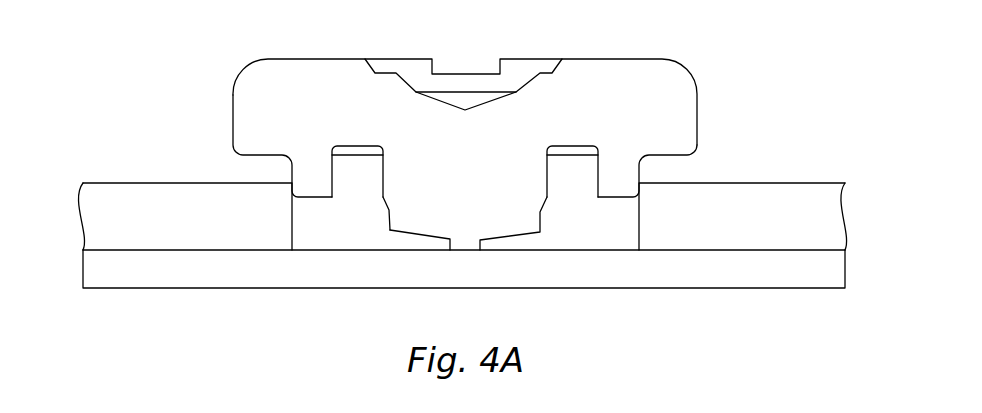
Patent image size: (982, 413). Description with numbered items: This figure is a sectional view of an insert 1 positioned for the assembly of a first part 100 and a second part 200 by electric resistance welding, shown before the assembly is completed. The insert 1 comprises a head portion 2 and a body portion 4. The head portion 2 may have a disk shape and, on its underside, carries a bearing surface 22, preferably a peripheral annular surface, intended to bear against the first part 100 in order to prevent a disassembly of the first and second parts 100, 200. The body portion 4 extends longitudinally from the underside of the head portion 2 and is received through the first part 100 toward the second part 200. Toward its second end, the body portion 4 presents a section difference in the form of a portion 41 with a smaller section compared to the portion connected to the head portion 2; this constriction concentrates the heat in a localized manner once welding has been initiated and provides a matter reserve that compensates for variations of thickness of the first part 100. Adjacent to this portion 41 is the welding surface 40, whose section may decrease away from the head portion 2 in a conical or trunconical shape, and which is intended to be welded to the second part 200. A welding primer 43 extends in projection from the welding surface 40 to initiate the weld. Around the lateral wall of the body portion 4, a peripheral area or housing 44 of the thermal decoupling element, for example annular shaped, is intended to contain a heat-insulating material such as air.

The insert 1 is at (464, 172).
The head portion 2 is at (314, 86).
The bearing surface 22 is at (260, 165).
The body portion 4 is at (507, 200).
The welding surface 40 is at (432, 245).
The portion with a smaller section 41 is at (385, 205).
The welding primer 43 is at (350, 148).
The peripheral area or housing 44 is at (355, 173).
The first part 100 is at (762, 210).
The second part 200 is at (685, 262).